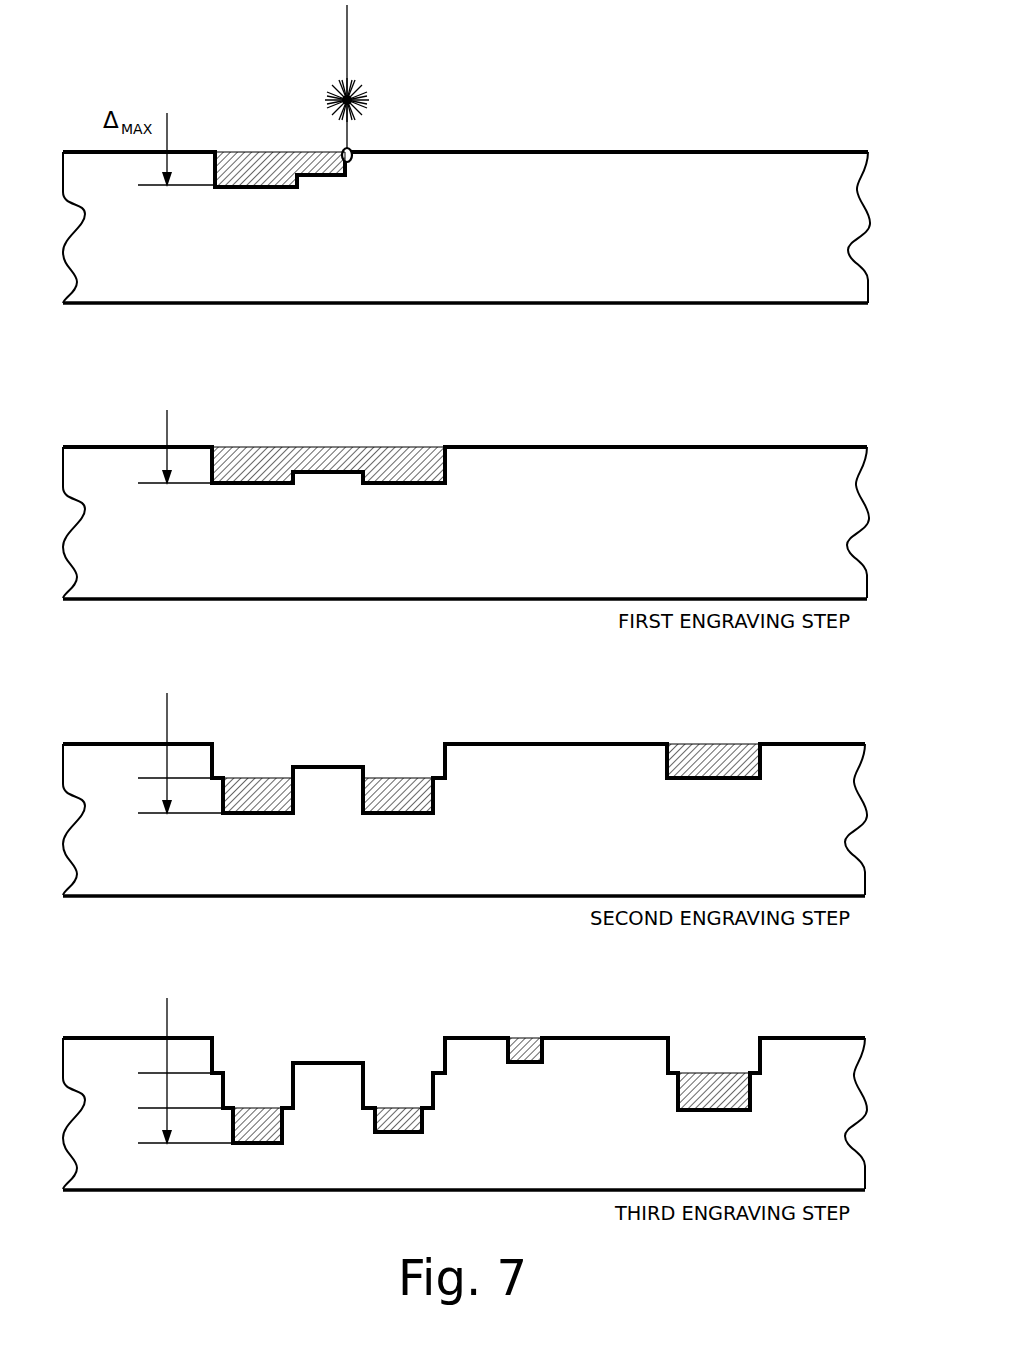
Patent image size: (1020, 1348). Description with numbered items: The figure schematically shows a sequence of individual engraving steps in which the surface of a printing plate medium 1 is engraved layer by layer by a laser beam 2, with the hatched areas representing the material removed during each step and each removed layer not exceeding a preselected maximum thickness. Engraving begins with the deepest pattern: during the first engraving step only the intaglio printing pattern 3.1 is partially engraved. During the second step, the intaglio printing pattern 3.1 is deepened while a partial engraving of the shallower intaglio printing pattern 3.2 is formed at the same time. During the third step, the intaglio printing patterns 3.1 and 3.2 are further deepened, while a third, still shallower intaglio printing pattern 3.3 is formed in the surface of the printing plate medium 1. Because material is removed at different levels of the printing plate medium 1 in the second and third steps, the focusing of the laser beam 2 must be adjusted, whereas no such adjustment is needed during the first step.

The printing plate medium 1 is at (566, 165).
The laser beam 2 is at (351, 31).
The first intaglio printing pattern 3.1 is at (272, 148).
The second intaglio printing pattern 3.2 is at (713, 737).
The third intaglio printing pattern 3.3 is at (523, 1035).